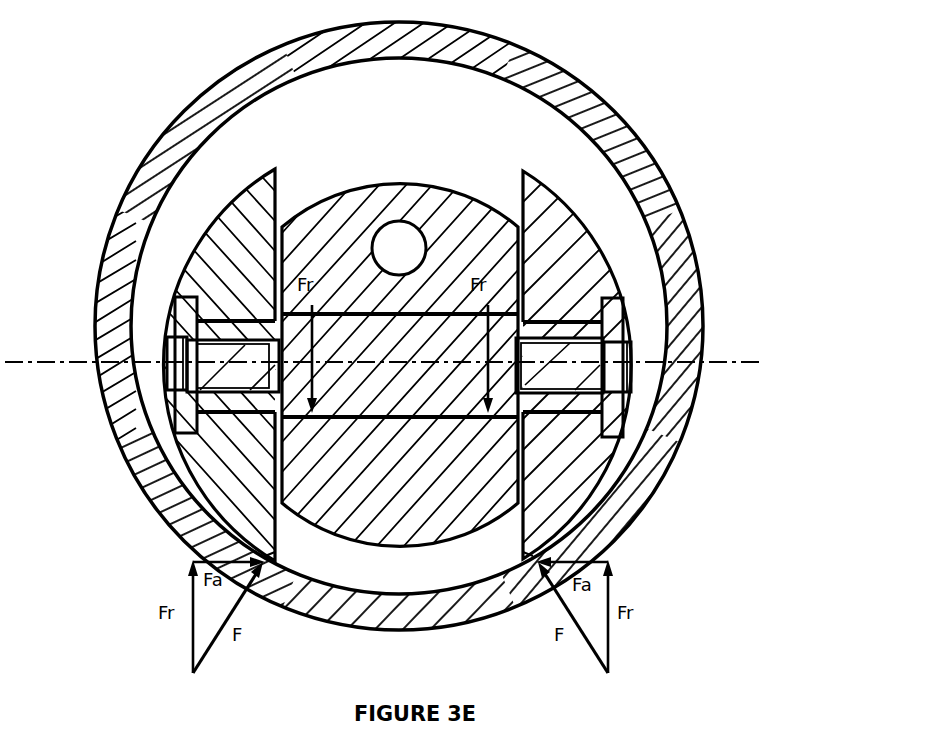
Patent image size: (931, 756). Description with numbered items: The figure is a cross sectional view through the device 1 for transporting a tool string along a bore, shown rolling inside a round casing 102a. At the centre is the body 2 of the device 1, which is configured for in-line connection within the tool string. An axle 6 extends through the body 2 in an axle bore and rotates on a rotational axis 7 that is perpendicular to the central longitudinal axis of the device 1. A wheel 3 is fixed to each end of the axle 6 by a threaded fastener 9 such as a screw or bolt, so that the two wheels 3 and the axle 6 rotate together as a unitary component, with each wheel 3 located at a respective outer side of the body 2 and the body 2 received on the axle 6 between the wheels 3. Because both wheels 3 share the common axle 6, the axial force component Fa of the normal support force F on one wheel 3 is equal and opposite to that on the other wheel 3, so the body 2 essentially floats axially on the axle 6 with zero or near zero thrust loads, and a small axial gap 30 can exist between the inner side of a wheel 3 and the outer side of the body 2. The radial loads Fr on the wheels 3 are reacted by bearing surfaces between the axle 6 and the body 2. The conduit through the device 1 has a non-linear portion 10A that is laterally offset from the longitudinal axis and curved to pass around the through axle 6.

The device 1 is at (595, 172).
The casing 102a is at (163, 140).
The body 2 is at (468, 222).
The wheels 3 is at (205, 278).
The axle 6 is at (211, 403).
The rotational axis 7 is at (725, 360).
The threaded fastener 9 is at (255, 318).
The non-linear portion 10A is at (399, 248).
The axial gap 30 is at (277, 540).